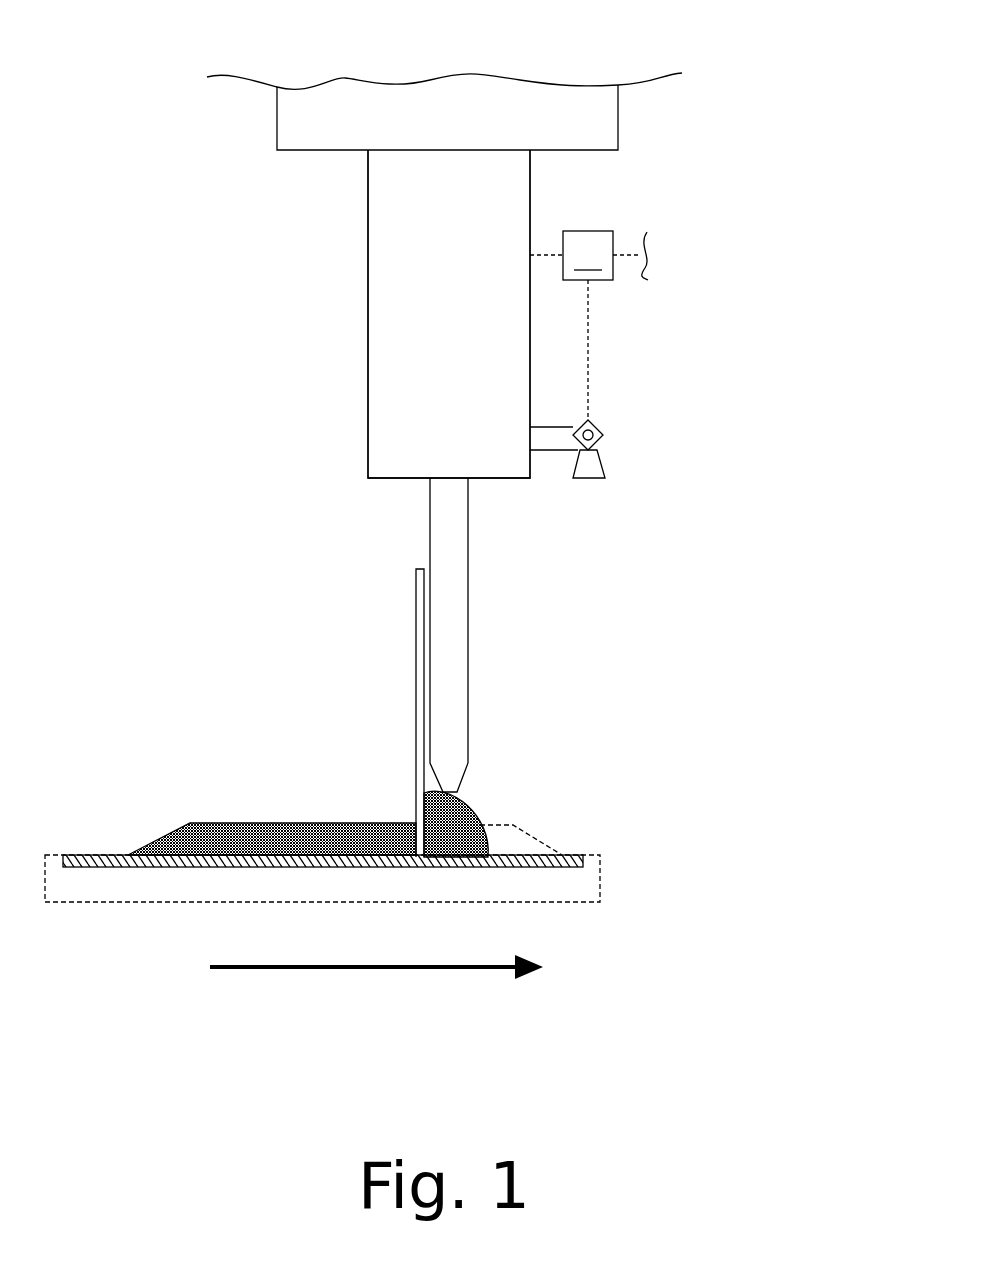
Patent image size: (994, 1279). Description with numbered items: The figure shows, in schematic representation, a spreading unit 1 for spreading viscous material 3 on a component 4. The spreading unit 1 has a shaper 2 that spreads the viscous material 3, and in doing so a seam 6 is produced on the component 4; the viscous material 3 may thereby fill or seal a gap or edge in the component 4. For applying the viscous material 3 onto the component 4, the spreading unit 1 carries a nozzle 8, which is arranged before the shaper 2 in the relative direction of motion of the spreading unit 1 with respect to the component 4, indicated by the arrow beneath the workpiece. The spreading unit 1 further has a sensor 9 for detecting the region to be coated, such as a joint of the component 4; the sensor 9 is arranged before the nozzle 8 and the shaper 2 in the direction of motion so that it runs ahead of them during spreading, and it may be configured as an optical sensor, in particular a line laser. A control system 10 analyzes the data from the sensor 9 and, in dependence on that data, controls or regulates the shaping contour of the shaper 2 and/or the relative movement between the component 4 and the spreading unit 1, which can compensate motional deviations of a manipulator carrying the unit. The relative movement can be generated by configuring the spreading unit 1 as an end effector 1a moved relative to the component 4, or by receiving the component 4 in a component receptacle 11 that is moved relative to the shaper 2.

The spreading unit 1 is at (716, 70).
The end effector 1a is at (449, 314).
The shaper 2 is at (418, 658).
The viscous material 3 is at (470, 802).
The component 4 is at (95, 855).
The seam 6 is at (188, 822).
The nozzle 8 is at (455, 687).
The sensor 9 is at (603, 430).
The control system 10 is at (589, 325).
The component receptacle 11 is at (565, 890).